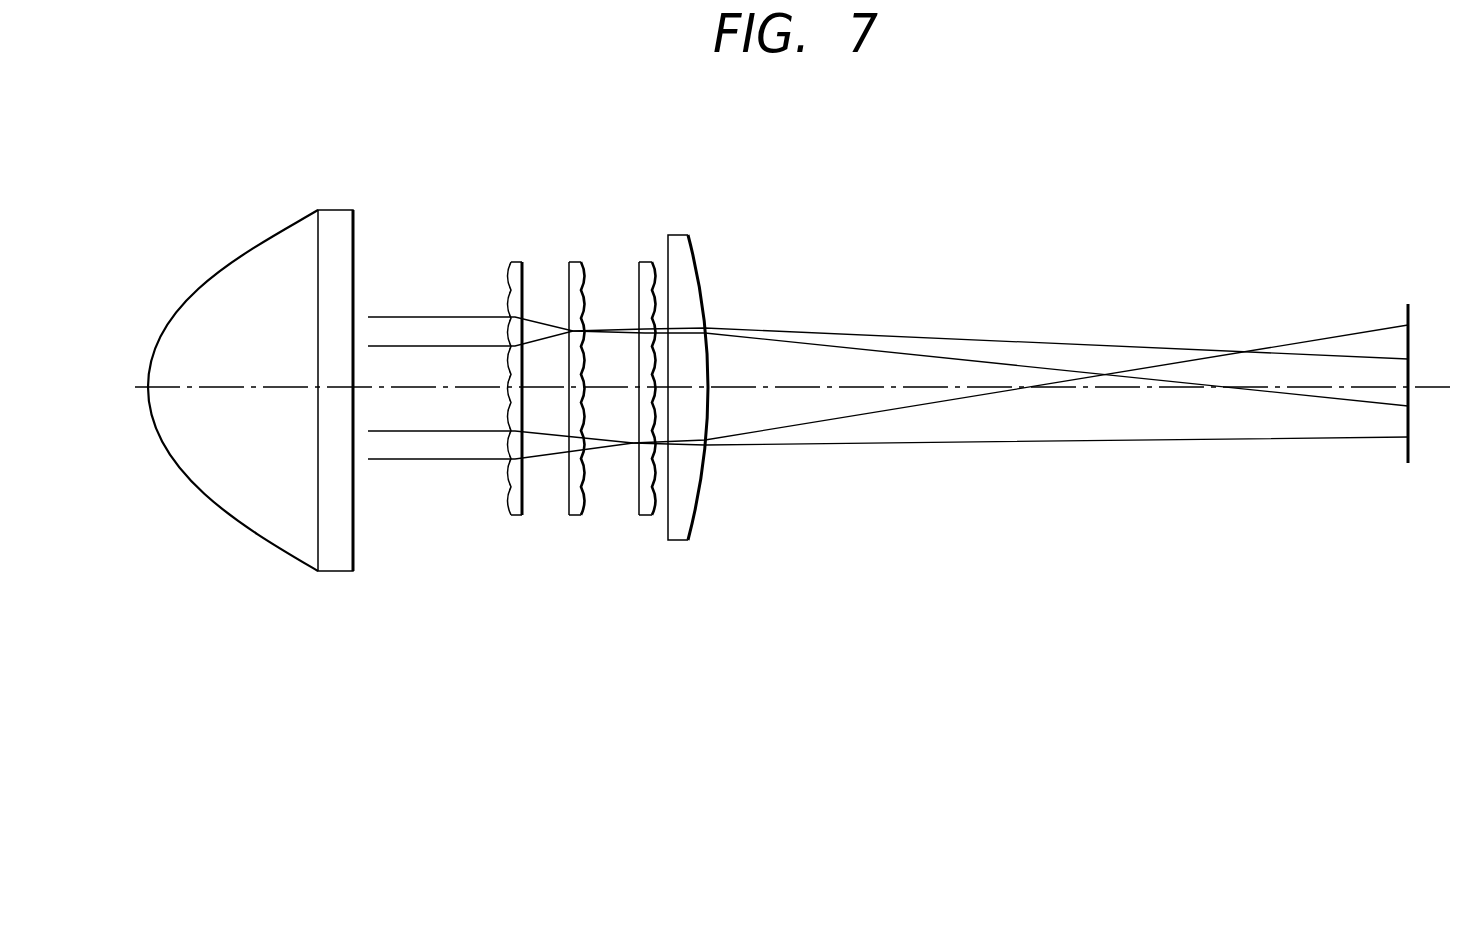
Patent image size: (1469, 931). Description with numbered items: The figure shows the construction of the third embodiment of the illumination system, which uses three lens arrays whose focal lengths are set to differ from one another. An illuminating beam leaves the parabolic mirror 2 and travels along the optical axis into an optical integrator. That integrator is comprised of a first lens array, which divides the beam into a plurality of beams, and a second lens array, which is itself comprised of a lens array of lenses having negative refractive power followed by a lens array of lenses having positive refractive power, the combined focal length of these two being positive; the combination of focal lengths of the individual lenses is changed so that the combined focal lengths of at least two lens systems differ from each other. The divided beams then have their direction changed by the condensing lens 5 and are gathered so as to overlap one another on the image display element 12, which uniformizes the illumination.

The parabolic mirror 2 is at (290, 229).
The condensing lens 5 is at (690, 237).
The image display element 12 is at (1410, 319).